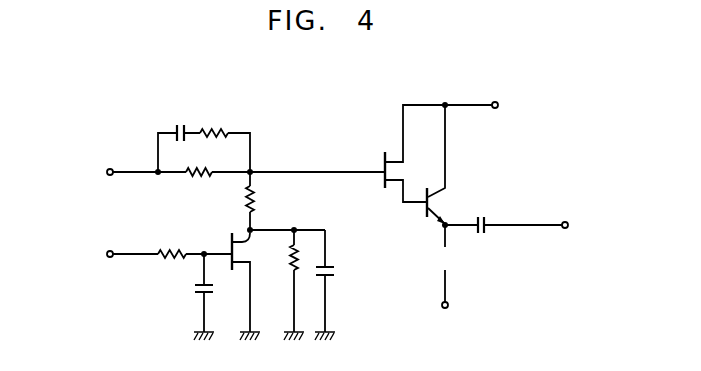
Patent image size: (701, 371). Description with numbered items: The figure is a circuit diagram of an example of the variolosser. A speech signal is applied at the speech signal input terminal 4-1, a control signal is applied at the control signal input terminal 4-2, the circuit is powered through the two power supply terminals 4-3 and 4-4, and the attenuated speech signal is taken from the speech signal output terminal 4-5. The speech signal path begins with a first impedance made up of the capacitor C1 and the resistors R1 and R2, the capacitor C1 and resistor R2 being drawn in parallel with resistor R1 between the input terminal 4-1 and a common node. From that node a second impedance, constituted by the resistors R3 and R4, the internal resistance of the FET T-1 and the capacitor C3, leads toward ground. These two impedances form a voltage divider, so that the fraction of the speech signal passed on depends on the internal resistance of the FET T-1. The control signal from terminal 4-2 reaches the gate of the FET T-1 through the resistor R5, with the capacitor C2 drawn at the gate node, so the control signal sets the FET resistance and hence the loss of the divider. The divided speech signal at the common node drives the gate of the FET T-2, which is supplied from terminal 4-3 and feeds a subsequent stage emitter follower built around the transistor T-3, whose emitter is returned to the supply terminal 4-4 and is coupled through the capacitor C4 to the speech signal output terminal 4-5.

The speech signal input terminal 4-1 is at (109, 168).
The control signal input terminal 4-2 is at (110, 258).
The power supply terminal 4-3 is at (494, 102).
The power supply terminal 4-4 is at (446, 309).
The speech signal output terminal 4-5 is at (565, 222).
The capacitor C1 is at (183, 121).
The capacitor C2 is at (197, 287).
The capacitor C3 is at (334, 270).
The capacitor C4 is at (483, 236).
The resistor R1 is at (202, 178).
The resistor R2 is at (224, 127).
The resistor R3 is at (257, 198).
The resistor R4 is at (278, 271).
The resistor R5 is at (168, 262).
The FET T-1 is at (245, 241).
The FET T-2 is at (393, 189).
The transistor T-3 is at (440, 200).